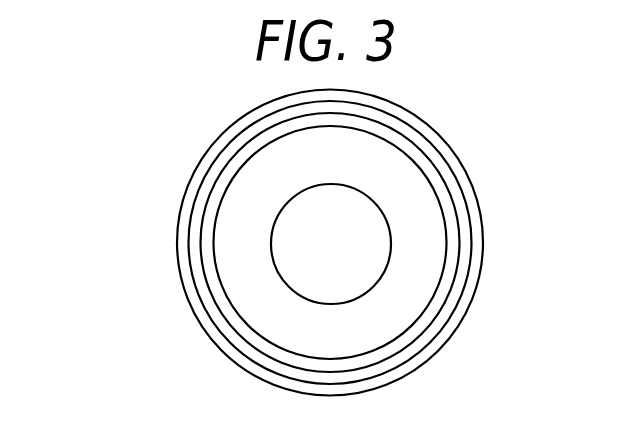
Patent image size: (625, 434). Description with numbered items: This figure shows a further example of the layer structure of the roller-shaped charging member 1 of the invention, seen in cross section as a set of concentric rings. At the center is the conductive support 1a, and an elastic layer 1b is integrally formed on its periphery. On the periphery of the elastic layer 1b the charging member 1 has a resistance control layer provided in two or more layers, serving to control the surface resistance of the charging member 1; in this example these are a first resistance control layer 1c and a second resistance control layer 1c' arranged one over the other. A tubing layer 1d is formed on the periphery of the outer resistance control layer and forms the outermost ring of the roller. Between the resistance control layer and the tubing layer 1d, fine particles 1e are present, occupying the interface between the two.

The charging member 1 is at (110, 102).
The conductive support 1a is at (307, 252).
The elastic layer 1b is at (243, 248).
The first resistance control layer 1c is at (279, 242).
The second resistance control layer 1c' is at (286, 242).
The tubing layer 1d is at (215, 140).
The fine particles 1e is at (207, 170).